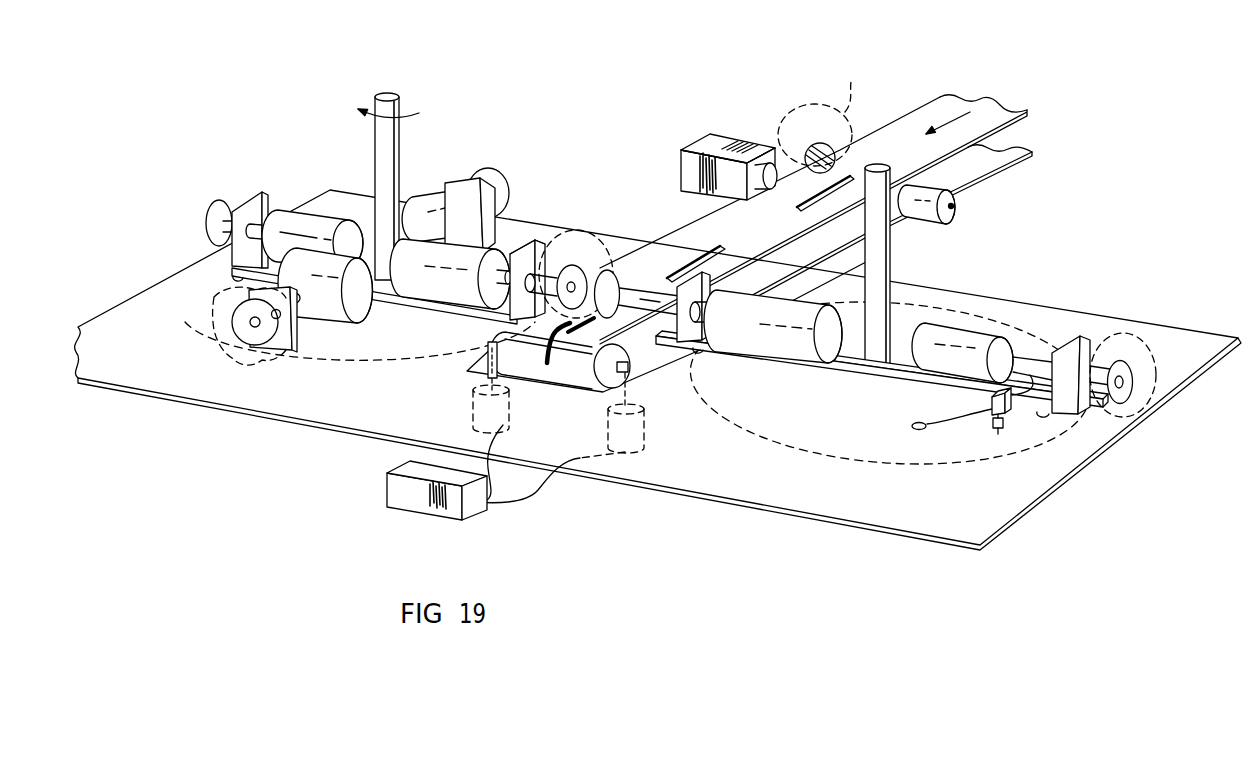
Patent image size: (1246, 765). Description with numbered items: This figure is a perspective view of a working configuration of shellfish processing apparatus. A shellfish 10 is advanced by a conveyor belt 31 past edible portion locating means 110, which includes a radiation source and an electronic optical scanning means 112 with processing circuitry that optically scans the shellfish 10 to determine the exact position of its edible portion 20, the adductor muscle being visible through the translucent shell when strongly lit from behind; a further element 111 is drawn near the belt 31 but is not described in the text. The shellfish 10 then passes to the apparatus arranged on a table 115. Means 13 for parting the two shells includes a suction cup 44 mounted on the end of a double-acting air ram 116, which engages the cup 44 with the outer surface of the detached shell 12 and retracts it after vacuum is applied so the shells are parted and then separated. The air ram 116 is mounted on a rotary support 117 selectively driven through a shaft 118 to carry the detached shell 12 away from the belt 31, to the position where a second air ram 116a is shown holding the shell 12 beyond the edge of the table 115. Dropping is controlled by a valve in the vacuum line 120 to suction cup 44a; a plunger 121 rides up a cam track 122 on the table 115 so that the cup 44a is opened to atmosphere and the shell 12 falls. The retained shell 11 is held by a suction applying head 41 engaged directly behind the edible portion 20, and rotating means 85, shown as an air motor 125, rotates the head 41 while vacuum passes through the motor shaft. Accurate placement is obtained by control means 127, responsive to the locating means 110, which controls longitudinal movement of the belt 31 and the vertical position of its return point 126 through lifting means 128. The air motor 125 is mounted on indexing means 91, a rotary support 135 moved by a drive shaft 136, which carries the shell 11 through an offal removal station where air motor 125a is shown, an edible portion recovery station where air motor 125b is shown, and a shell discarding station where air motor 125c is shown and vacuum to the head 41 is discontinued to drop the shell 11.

The shellfish 10 is at (842, 110).
The retained shell 11 is at (220, 327).
The detached shell 12 is at (1148, 333).
The means for parting the two shells 13 is at (592, 240).
The edible portion 20 is at (806, 120).
The conveyor belt 31 is at (920, 120).
The suction applying head 41 is at (568, 258).
The suction cup 44 is at (649, 289).
The suction cup 44a is at (1124, 382).
The rotating means 85 is at (505, 237).
The indexing means 91 is at (484, 329).
The edible portion locating means 110 is at (724, 136).
The roller 111 is at (956, 208).
The electronic optical scanning means 112 is at (700, 185).
The table 115 is at (985, 518).
The double-acting air ram 116 is at (772, 338).
The second air ram 116a is at (968, 345).
The rotary support 117 is at (852, 362).
The shaft 118 is at (889, 258).
The vacuum line 120 is at (912, 423).
The plunger 121 is at (990, 424).
The cam track 122 is at (1006, 428).
The air motor 125 is at (446, 275).
The air motor 125a is at (340, 285).
The air motor 125b is at (305, 218).
The air motor 125c is at (432, 208).
The return point 126 is at (570, 374).
The control means 127 is at (400, 490).
The lifting means 128 is at (470, 410).
The rotary support 135 is at (510, 292).
The drive shaft 136 is at (384, 133).